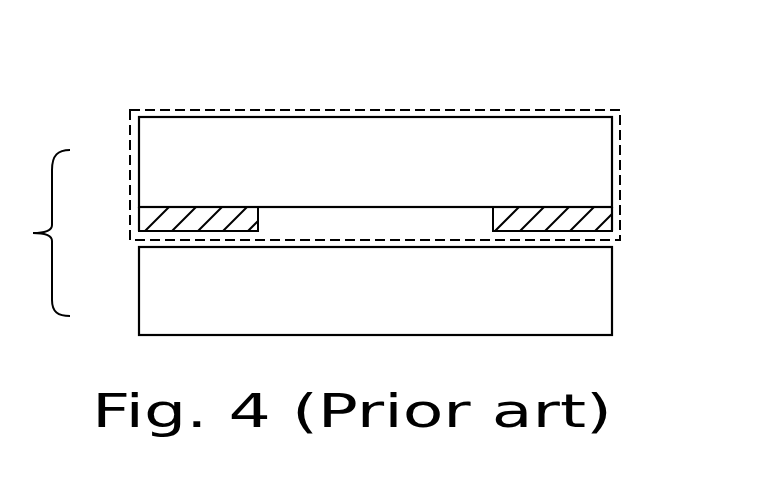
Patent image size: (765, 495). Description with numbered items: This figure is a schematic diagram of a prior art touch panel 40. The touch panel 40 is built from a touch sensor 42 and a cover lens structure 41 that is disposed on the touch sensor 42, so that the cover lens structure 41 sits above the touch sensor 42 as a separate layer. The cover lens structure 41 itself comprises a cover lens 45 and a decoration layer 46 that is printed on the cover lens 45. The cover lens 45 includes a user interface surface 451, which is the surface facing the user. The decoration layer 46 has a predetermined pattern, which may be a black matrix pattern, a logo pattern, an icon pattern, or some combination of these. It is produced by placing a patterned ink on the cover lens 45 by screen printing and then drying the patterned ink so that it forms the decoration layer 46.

The touch panel 40 is at (600, 89).
The cover lens structure 41 is at (198, 108).
The touch sensor 42 is at (177, 306).
The cover lens 45 is at (177, 163).
The user interface surface 451 is at (305, 117).
The decoration layer 46 is at (592, 222).